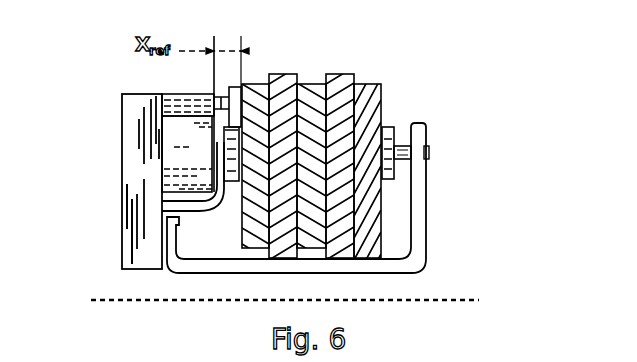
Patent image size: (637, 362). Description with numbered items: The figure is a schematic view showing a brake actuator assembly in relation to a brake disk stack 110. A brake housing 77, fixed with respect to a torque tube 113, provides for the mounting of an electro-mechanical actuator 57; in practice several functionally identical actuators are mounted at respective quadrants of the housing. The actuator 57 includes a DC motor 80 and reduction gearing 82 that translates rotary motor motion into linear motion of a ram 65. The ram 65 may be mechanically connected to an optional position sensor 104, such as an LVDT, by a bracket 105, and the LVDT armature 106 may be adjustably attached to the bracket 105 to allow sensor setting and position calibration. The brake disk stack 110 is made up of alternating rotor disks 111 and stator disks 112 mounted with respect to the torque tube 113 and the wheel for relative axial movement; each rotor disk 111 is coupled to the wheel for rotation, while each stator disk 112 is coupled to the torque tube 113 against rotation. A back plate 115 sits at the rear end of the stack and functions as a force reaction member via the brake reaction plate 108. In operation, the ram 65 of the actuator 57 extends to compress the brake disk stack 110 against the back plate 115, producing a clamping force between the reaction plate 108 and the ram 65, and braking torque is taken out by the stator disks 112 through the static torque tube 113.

The electro-mechanical actuator 57 is at (163, 113).
The ram 65 is at (162, 212).
The housing 77 is at (122, 111).
The DC motor 80 is at (122, 185).
The reduction gearing 82 is at (122, 185).
The position sensor 104 is at (175, 96).
The bracket 105 is at (243, 87).
The LVDT armature 106 is at (227, 100).
The brake reaction plate 108 is at (395, 127).
The brake disk stack 110 is at (344, 169).
The rotor disk 111 is at (333, 73).
The stator disk 112 is at (336, 262).
The torque tube 113 is at (383, 273).
The back plate 115 is at (428, 210).